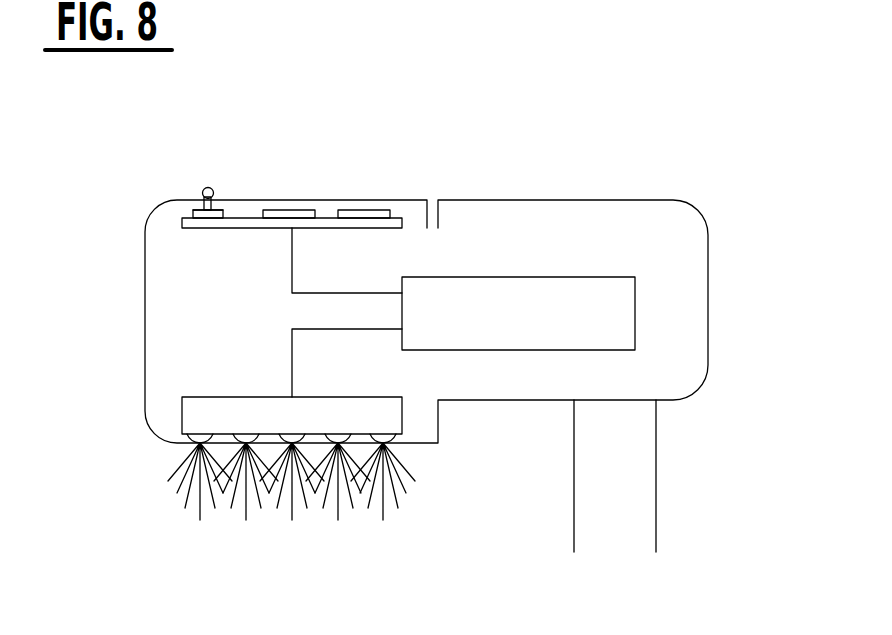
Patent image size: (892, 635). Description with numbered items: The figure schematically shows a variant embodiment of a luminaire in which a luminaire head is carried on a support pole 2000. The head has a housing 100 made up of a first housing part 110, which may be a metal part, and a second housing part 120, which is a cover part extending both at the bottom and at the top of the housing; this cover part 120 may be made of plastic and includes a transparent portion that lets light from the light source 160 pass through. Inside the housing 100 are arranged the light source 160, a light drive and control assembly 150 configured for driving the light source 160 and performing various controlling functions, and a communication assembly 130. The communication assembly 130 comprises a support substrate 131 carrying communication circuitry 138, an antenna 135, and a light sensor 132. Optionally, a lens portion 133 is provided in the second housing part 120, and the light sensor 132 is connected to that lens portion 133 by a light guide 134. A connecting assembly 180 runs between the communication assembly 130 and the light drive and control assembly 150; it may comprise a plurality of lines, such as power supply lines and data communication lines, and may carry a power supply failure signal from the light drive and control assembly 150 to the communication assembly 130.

The housing 100 is at (717, 297).
The first housing part 110 is at (540, 198).
The second housing part 120 is at (163, 313).
The communication assembly 130 is at (224, 237).
The support substrate 131 is at (192, 226).
The light sensor 132 is at (193, 212).
The lens portion 133 is at (212, 193).
The light guide 134 is at (192, 208).
The antenna 135 is at (368, 212).
The communication circuitry 138 is at (297, 210).
The light drive and control assembly 150 is at (570, 290).
The light source 160 is at (200, 415).
The connecting assembly 180 is at (288, 304).
The support pole 2000 is at (618, 490).